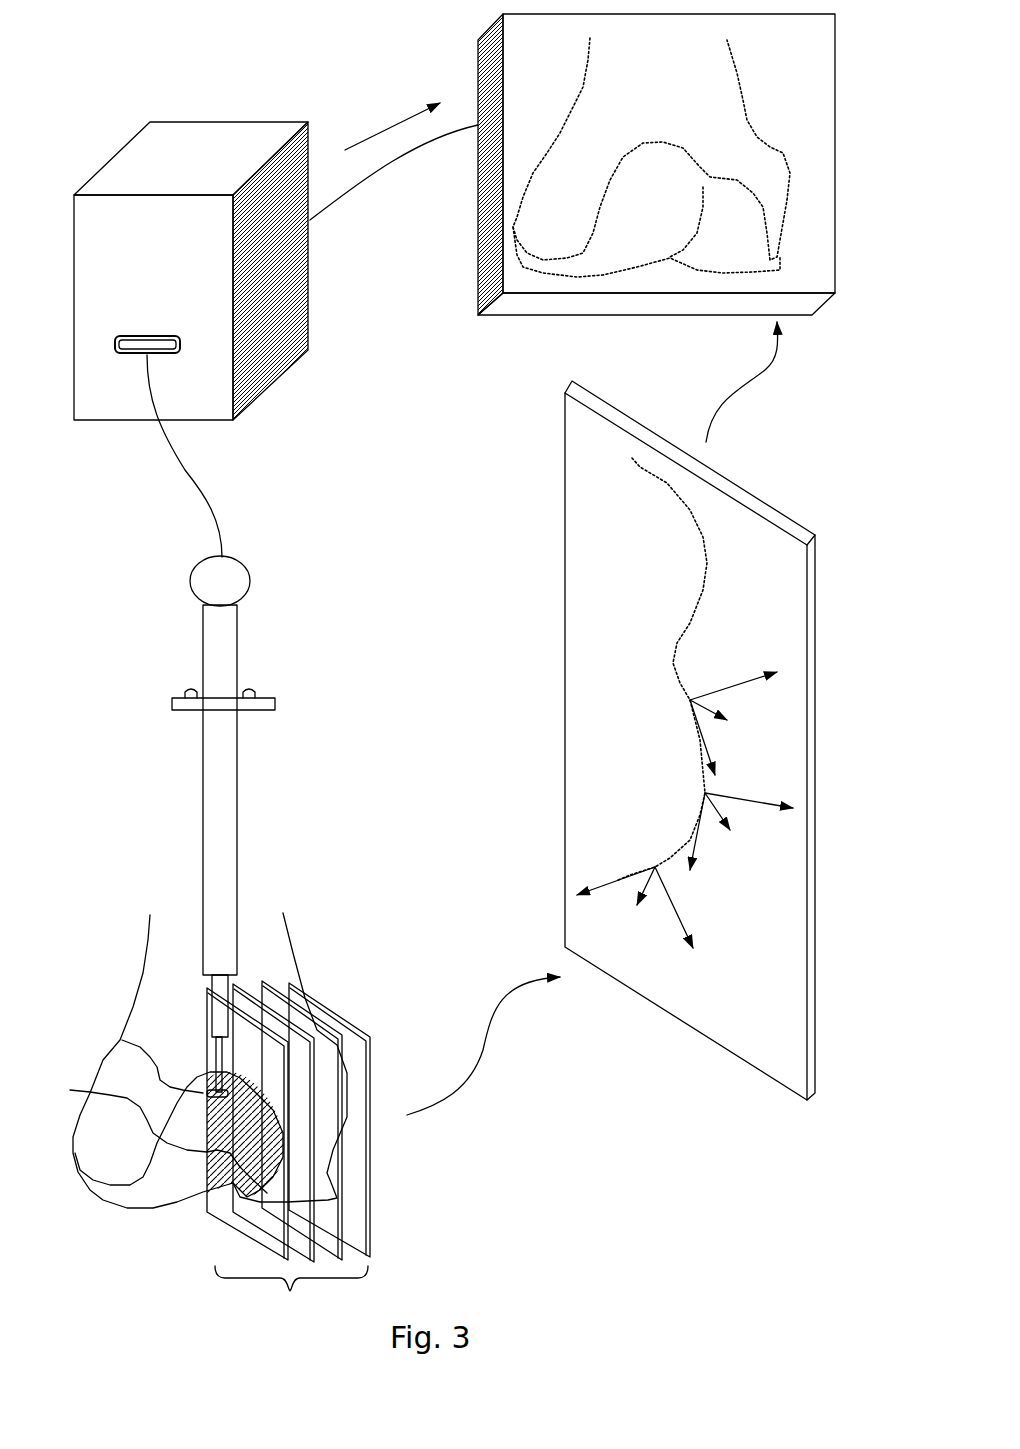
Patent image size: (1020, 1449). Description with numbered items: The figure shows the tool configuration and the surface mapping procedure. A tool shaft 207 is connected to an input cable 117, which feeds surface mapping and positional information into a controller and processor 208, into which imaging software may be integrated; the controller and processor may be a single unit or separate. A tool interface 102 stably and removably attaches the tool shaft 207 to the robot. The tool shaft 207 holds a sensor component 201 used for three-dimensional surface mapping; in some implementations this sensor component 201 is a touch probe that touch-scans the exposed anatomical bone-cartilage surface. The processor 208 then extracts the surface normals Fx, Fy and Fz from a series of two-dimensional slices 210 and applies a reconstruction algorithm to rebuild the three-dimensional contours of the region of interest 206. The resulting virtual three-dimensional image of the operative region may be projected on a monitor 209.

The tool interface 102 is at (172, 702).
The input cable 117 is at (208, 505).
The sensor component 201 is at (122, 1040).
The region of interest 206 is at (144, 1135).
The tool shaft 207 is at (200, 808).
The controller and processor 208 is at (175, 150).
The monitor 209 is at (797, 143).
The two-dimensional slices 210 is at (563, 652).